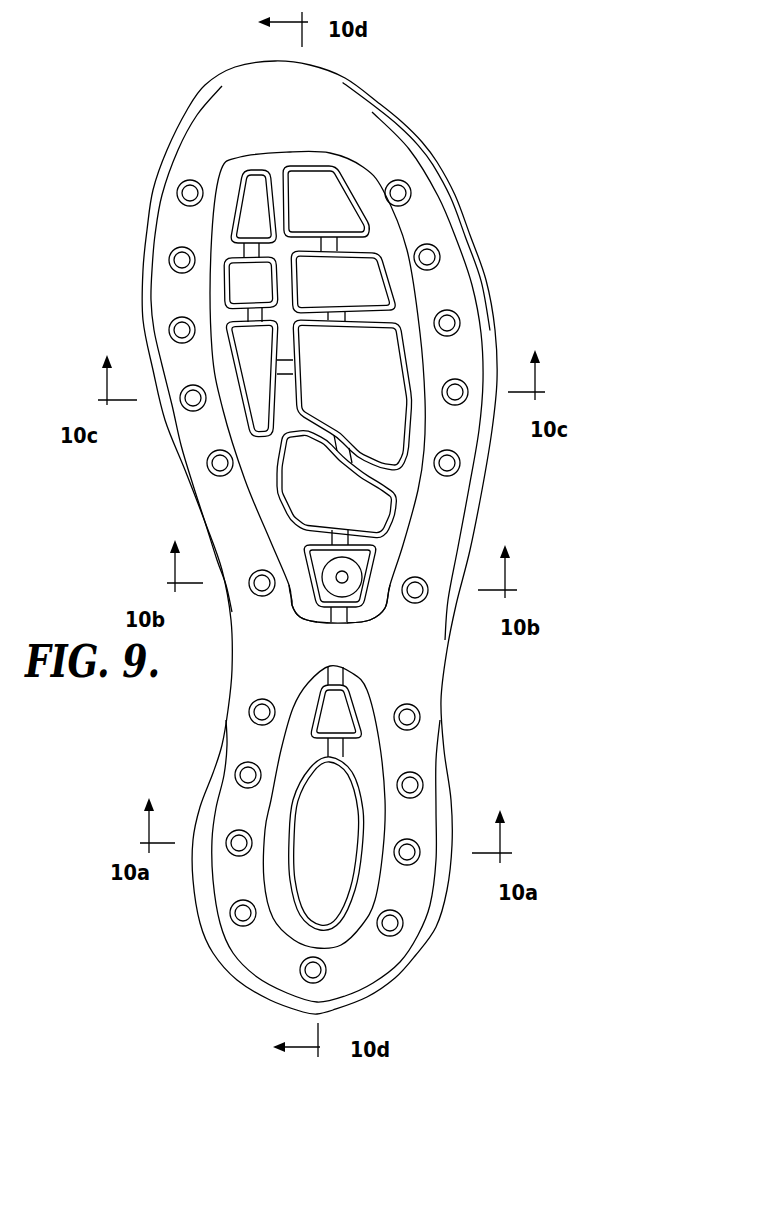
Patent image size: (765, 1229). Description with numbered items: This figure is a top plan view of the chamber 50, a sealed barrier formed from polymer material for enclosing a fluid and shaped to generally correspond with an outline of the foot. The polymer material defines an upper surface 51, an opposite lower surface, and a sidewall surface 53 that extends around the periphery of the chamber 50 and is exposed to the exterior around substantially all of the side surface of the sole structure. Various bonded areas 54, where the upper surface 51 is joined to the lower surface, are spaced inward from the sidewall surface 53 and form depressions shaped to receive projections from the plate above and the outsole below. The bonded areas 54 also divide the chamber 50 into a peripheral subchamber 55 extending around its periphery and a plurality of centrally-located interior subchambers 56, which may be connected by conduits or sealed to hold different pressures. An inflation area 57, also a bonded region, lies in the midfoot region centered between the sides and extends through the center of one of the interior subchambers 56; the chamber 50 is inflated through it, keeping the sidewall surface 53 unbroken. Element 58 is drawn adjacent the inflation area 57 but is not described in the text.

The sole structure 50 is at (480, 171).
The base plate / central support platform 51 is at (355, 657).
The outsole plate 53 is at (472, 279).
The traction elements (ring lugs) 54 is at (275, 167).
The peripheral rim 55 is at (213, 107).
The traction pads 56 is at (332, 216).
The left projection of forefoot platform 57 is at (312, 608).
The right projection of forefoot platform 58 is at (370, 620).